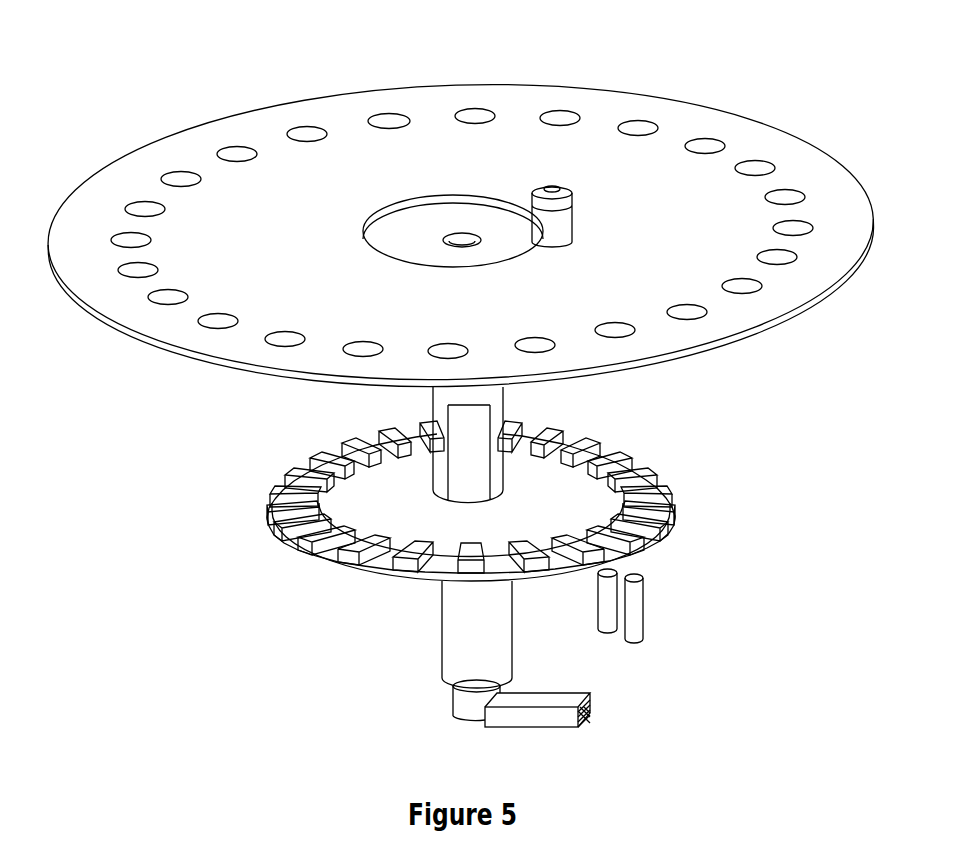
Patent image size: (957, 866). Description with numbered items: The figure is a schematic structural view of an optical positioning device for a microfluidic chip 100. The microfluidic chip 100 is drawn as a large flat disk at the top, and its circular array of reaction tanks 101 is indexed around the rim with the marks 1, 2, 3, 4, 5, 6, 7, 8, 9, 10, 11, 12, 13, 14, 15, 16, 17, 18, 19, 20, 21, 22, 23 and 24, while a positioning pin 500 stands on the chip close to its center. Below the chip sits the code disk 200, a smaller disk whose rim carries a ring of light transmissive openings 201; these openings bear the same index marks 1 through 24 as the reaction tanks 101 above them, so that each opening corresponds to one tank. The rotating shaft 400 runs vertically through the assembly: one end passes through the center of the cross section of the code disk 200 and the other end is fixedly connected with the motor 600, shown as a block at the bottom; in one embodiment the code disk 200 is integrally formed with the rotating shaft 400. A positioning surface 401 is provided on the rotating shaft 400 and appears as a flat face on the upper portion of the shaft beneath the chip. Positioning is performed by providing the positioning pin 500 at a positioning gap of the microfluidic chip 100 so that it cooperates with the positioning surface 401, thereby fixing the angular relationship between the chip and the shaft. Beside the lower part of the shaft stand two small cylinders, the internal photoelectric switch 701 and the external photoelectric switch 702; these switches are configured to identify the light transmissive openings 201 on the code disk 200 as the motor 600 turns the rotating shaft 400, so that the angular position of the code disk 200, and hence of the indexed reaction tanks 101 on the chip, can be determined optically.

The microfluidic chip 100 is at (597, 90).
The reaction tank 101 is at (387, 120).
The code disk 200 is at (275, 499).
The light transmissive opening 201 is at (377, 557).
The rotating shaft 400 is at (463, 658).
The positioning surface 401 is at (442, 467).
The positioning pin 500 is at (565, 226).
The motor 600 is at (572, 700).
The internal photoelectric switch 701 is at (605, 622).
The external photoelectric switch 702 is at (633, 620).
The hole 1 is at (701, 356).
The hole 2 is at (706, 339).
The hole 3 is at (681, 320).
The hole 4 is at (643, 305).
The hole 5 is at (594, 292).
The hole 6 is at (539, 285).
The hole 7 is at (475, 132).
The hole 8 is at (406, 242).
The hole 9 is at (349, 297).
The hole 10 is at (301, 310).
The hole 11 is at (261, 327).
The hole 12 is at (234, 347).
The hole 13 is at (223, 366).
The hole 14 is at (235, 389).
The hole 15 is at (252, 409).
The hole 16 is at (288, 425).
The hole 17 is at (333, 474).
The hole 18 is at (388, 442).
The hole 19 is at (456, 444).
The hole 20 is at (525, 441).
The hole 21 is at (584, 430).
The hole 22 is at (634, 417).
The hole 23 is at (671, 398).
The hole 24 is at (698, 379).